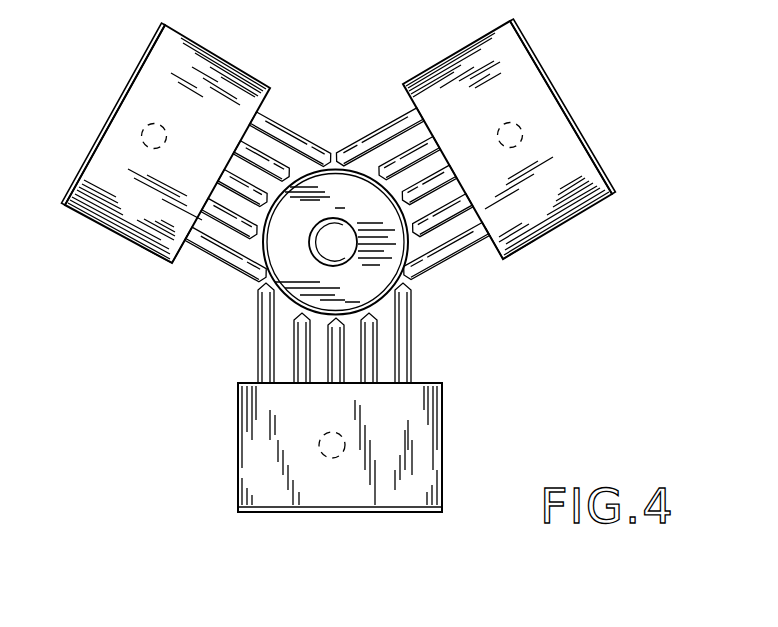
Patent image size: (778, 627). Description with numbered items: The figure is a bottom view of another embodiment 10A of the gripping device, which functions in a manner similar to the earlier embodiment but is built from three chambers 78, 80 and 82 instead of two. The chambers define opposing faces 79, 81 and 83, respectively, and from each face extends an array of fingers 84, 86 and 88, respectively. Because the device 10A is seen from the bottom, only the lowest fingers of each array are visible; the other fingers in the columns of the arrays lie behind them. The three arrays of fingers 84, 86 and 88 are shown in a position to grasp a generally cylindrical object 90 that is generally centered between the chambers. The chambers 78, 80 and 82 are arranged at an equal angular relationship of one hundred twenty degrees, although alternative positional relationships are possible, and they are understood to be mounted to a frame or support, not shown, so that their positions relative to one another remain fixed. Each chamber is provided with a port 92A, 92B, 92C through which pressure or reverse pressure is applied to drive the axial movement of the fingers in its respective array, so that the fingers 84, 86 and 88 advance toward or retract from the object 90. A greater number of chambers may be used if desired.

The embodiment 10A is at (130, 390).
The chamber 78 is at (95, 150).
The opposing face 79 is at (172, 263).
The chamber 80 is at (582, 132).
The opposing face 81 is at (503, 259).
The chamber 82 is at (444, 438).
The opposing face 83 is at (423, 381).
The array of fingers 84 is at (232, 274).
The array of fingers 86 is at (372, 128).
The array of fingers 88 is at (413, 328).
The generally cylindrical object 90 is at (335, 242).
The port 92A is at (155, 120).
The port 92B is at (522, 128).
The port 92C is at (314, 447).